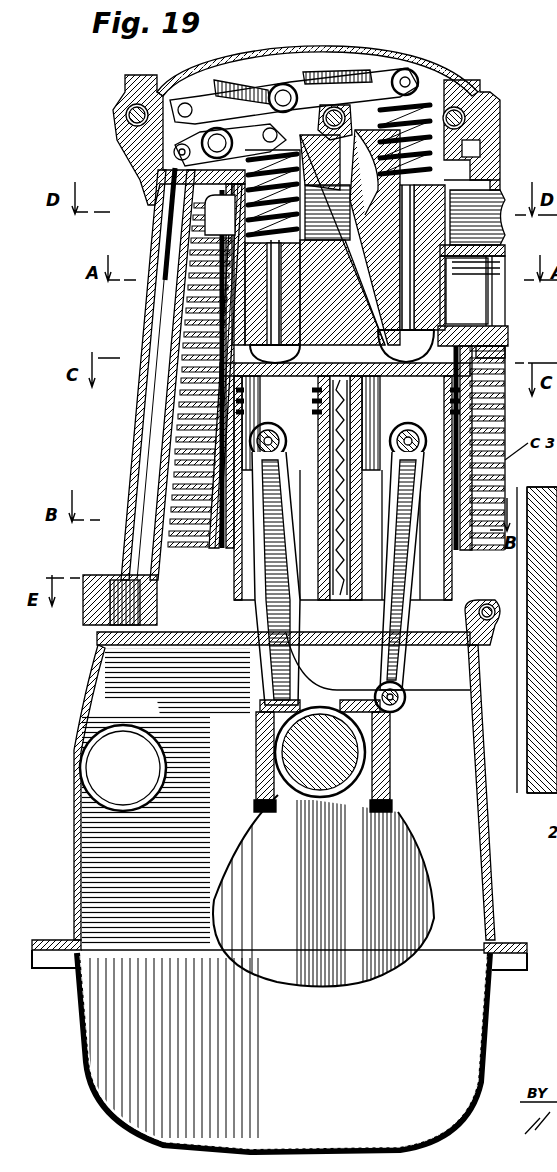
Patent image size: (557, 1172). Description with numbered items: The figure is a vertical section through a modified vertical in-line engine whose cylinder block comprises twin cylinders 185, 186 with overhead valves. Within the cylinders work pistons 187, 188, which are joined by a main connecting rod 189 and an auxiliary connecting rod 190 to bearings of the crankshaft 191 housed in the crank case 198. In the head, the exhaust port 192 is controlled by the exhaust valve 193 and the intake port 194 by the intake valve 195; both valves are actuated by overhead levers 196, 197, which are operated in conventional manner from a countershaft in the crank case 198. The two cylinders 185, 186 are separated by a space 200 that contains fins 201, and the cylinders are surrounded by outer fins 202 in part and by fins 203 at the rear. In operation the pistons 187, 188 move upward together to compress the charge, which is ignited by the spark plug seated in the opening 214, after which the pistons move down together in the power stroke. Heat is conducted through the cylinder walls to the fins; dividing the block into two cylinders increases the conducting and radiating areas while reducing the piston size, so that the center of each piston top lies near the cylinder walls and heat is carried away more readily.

The cylinder 185 is at (210, 438).
The cylinder 186 is at (506, 427).
The piston 187 is at (270, 424).
The piston 188 is at (428, 474).
The main connecting rod 189 is at (267, 682).
The auxiliary connecting rod 190 is at (416, 578).
The crankshaft 191 is at (349, 760).
The exhaust port 192 is at (467, 291).
The exhaust valve 193 is at (394, 364).
The intake port 194 is at (341, 240).
The intake valve 195 is at (282, 301).
The overhead lever 196 is at (372, 62).
The overhead lever 197 is at (176, 148).
The crank case 198 is at (482, 846).
The space 200 is at (340, 570).
The fins 201 is at (328, 476).
The outer fins 202 is at (508, 478).
The outer fins at the rear 203 is at (170, 475).
The spark plug opening 214 is at (500, 366).